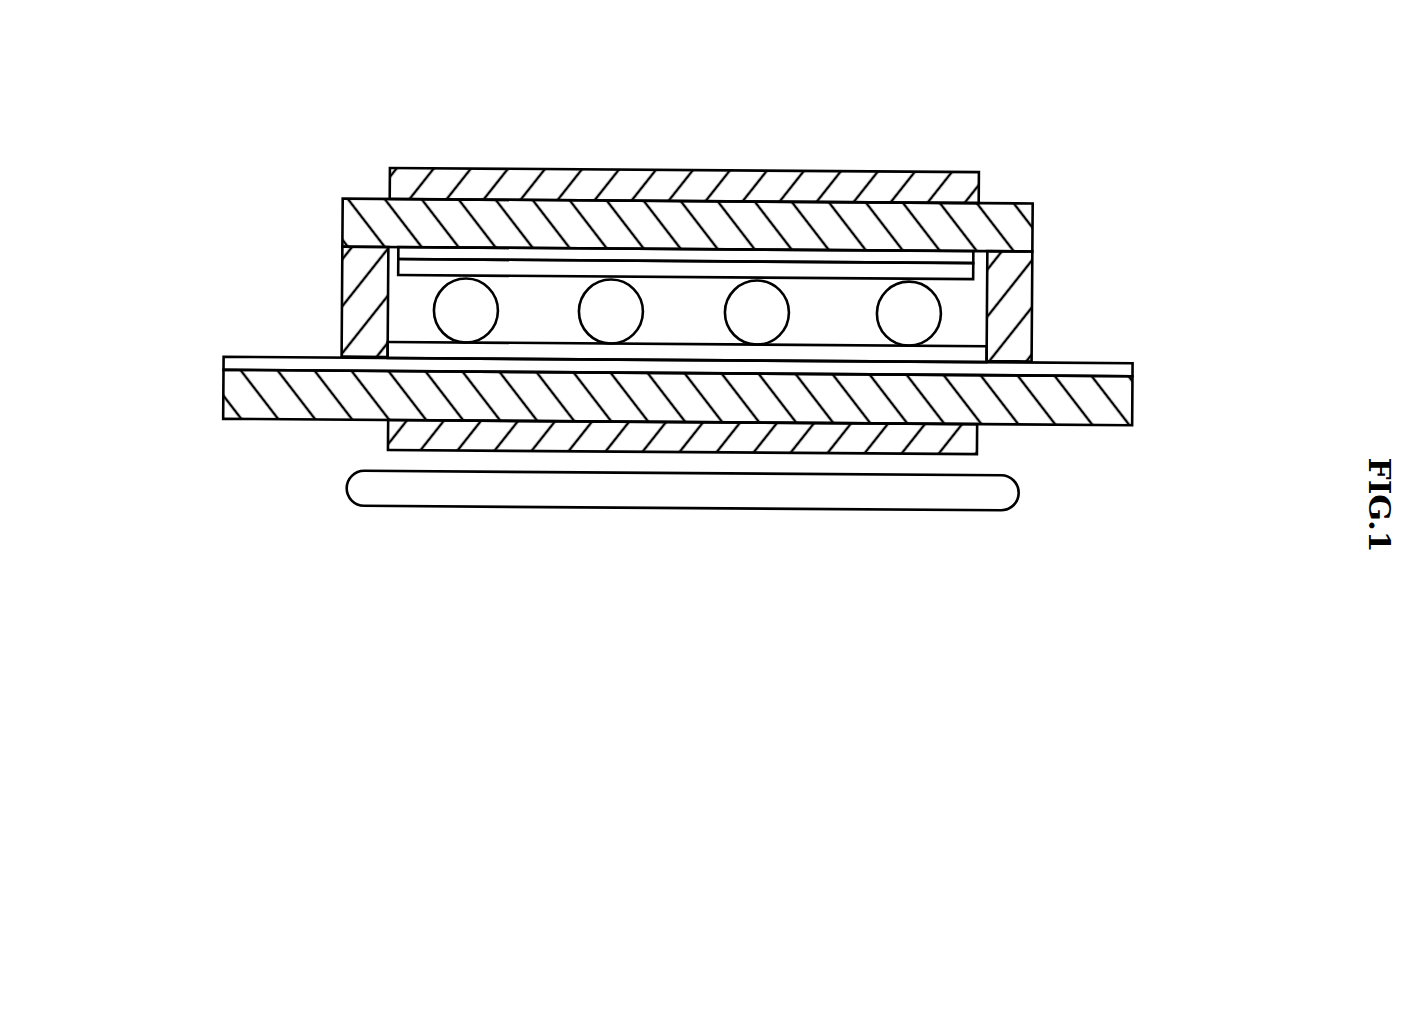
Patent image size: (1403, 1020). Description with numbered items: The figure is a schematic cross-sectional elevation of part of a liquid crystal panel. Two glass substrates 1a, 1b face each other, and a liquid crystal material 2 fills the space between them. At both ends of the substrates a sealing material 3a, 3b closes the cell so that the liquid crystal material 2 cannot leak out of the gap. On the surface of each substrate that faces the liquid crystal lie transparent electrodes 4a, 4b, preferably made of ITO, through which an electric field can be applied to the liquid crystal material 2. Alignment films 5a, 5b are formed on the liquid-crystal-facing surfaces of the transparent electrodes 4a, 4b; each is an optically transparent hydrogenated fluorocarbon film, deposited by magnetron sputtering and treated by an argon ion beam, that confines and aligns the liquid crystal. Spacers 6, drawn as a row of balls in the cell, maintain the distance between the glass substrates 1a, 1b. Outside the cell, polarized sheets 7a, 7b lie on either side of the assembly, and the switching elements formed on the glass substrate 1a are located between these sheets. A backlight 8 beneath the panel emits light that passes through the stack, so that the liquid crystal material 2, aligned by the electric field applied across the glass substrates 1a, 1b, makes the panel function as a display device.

The glass substrate 1a is at (1085, 426).
The glass substrate 1b is at (1033, 220).
The liquid crystal material 2 is at (785, 317).
The sealing material 3a is at (341, 327).
The sealing material 3b is at (1033, 320).
The transparent electrode 4a is at (765, 365).
The transparent electrode 4b is at (743, 258).
The alignment film 5a is at (650, 344).
The alignment film 5b is at (840, 277).
The spacers 6 is at (487, 288).
The polarized sheet 7a is at (497, 452).
The polarized sheet 7b is at (630, 170).
The backlight 8 is at (395, 506).